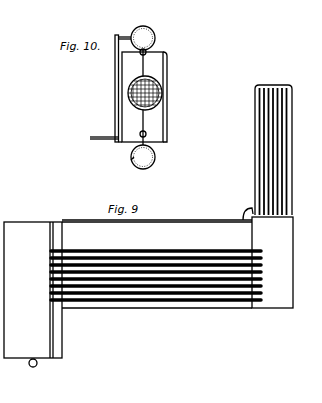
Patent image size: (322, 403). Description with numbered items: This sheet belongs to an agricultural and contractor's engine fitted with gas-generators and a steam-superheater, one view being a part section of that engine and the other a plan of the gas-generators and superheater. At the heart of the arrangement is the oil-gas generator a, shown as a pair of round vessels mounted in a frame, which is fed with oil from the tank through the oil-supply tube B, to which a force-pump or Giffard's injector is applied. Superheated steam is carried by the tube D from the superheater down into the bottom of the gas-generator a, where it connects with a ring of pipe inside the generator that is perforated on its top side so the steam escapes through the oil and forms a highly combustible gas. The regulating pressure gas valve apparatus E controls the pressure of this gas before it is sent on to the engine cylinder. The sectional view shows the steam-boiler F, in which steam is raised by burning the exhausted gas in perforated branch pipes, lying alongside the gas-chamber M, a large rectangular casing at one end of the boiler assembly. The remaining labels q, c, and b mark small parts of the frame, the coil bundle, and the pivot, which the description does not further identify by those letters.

In FIG. 10, the oil-supply tube B is at (123, 82).
In FIG. 10, the frame q is at (128, 103).
In FIG. 10, the oil-gas generator a is at (143, 97).
In FIG. 10, the regulating pressure gas valve apparatus E is at (147, 95).
In FIG. 10, the tube from superheater to gas-generator D is at (145, 97).
In FIG. 10, the steam-boiler F is at (128, 162).
In FIG. 9, the steam-boiler F is at (156, 264).
In FIG. 9, the gas-chamber M is at (33, 290).
In FIG. 9, the coil bundle c is at (268, 196).
In FIG. 9, the pivot b is at (21, 344).